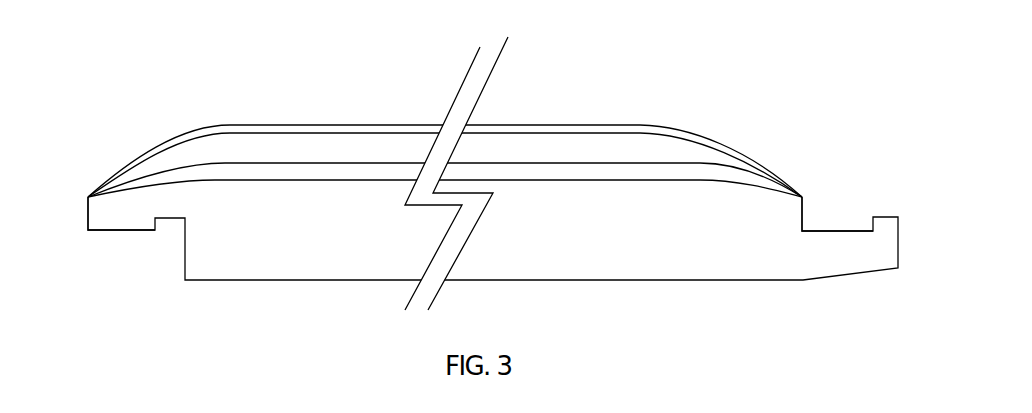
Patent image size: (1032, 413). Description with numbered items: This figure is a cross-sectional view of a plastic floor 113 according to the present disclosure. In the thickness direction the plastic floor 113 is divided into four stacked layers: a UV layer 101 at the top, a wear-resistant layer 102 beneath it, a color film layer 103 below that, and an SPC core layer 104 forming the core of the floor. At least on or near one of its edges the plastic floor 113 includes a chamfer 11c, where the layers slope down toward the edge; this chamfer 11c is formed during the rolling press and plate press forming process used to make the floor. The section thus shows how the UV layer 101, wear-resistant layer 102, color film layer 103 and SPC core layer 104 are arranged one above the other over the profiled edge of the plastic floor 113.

The plastic floor 113 is at (112, 138).
The UV layer 101 is at (578, 127).
The wear-resistant layer 102 is at (495, 147).
The color film layer 103 is at (570, 173).
The SPC core layer 104 is at (653, 203).
The chamfer 11c is at (763, 163).